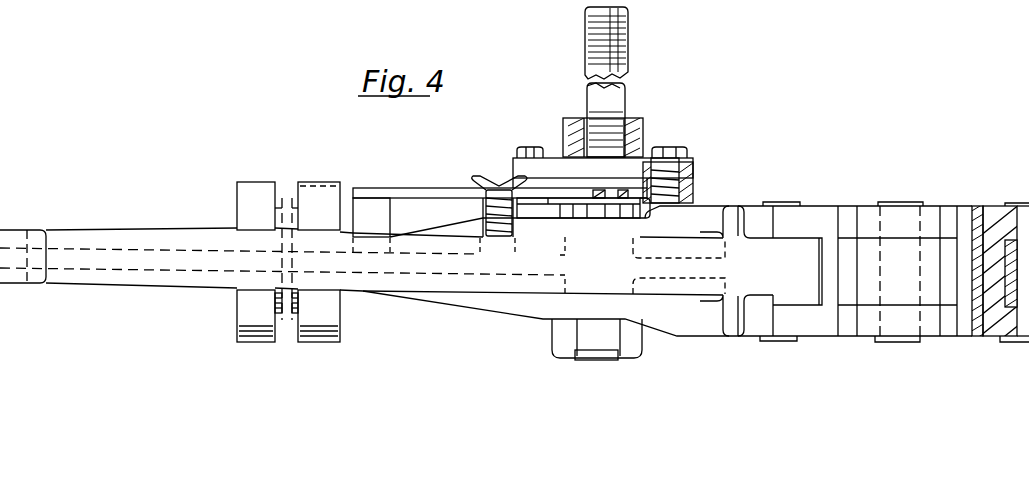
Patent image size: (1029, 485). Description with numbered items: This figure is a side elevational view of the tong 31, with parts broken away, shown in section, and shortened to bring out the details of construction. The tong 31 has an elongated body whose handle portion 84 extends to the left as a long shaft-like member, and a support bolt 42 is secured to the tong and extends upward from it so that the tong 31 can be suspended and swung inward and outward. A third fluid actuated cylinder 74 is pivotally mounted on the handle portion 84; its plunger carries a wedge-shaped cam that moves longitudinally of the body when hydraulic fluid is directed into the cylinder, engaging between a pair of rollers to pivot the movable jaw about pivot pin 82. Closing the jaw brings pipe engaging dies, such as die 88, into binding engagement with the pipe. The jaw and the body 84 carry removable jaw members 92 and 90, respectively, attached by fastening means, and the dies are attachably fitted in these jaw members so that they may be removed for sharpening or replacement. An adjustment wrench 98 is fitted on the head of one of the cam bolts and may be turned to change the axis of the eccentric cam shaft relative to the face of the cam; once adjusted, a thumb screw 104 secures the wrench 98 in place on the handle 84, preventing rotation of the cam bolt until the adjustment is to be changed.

The side opening tong 31 is at (934, 343).
The support bolt 42 is at (585, 37).
The third fluid actuated cylinder 74 is at (292, 314).
The pivot pin 82 is at (895, 203).
The handle portion 84 is at (138, 234).
The die 88 is at (972, 210).
The removable jaw member 90 is at (808, 212).
The removable jaw member 92 is at (993, 212).
The adjustment wrench 98 is at (422, 188).
The thumb screw 104 is at (491, 174).